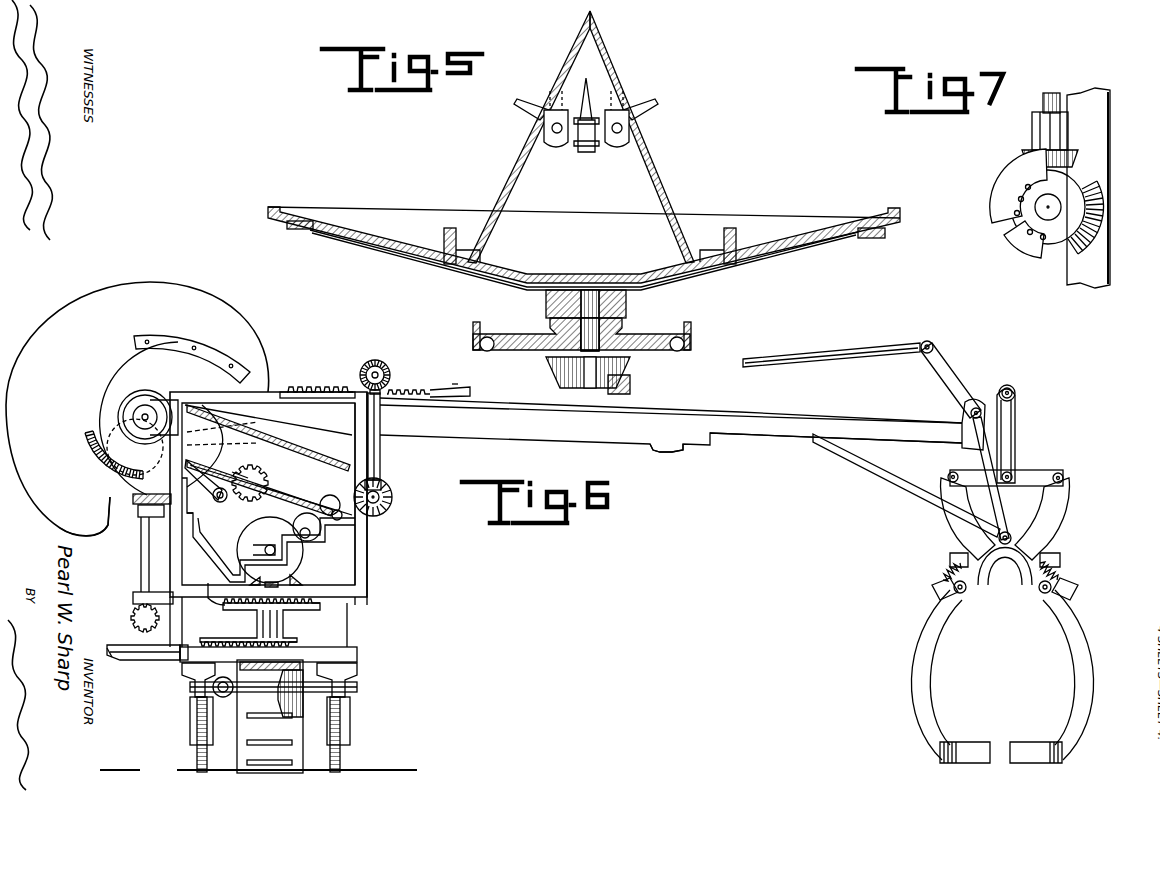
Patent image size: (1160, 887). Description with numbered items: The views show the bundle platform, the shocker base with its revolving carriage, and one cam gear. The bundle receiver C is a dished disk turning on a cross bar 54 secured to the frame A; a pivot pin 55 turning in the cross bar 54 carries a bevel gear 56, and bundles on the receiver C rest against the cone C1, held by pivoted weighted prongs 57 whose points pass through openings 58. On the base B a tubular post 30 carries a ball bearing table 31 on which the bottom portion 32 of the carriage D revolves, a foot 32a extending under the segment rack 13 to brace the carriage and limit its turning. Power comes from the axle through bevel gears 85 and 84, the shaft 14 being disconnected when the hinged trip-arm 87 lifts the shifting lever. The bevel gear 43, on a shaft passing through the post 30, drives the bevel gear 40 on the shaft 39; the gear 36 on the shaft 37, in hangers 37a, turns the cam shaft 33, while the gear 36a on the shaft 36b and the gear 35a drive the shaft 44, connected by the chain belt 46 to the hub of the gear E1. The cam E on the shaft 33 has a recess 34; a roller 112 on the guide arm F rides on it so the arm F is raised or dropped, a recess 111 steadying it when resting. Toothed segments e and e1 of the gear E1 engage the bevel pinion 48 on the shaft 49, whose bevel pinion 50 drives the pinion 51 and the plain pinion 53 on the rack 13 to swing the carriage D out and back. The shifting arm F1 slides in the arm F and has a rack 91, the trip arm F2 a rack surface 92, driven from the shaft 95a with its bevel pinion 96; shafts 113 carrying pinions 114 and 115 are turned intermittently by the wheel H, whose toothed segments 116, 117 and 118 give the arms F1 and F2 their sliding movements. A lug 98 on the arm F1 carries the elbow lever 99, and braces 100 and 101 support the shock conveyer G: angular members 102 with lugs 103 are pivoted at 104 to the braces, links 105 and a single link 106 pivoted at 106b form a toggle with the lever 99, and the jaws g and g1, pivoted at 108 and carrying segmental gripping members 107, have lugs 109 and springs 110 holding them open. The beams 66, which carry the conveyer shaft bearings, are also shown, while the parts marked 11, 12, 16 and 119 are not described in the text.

In FIG. 6, the leg bracket 11 is at (190, 716).
In FIG. 6, the roller wheel 12 is at (197, 756).
In FIG. 6, the segment rack 13 is at (376, 656).
In FIG. 6, the shaft 14 is at (283, 690).
In FIG. 6, the bearing bracket 16 is at (350, 686).
In FIG. 6, the tubular post 30 is at (283, 626).
In FIG. 6, the ball bearing table 31 is at (236, 610).
In FIG. 6, the bottom portion of carriage 32 is at (330, 591).
In FIG. 6, the foot 32a is at (180, 660).
In FIG. 6, the cam shaft 33 is at (118, 415).
In FIG. 6, the recess 34 is at (100, 500).
In FIG. 6, the gear 35a is at (380, 476).
In FIG. 6, the gear 36 is at (250, 487).
In FIG. 6, the gear 36a is at (306, 528).
In FIG. 6, the shaft 36b is at (338, 510).
In FIG. 6, the shaft 37 is at (220, 502).
In FIG. 6, the hangers 37a is at (250, 477).
In FIG. 6, the shaft 39 is at (262, 553).
In FIG. 6, the bevel gear 40 is at (270, 552).
In FIG. 6, the bevel gear 43 is at (316, 663).
In FIG. 7, the shaft 44 is at (1052, 207).
In FIG. 6, the shaft 44 is at (380, 495).
In FIG. 6, the chain belt 46 is at (305, 450).
In FIG. 6, the bevel pinion 48 is at (140, 512).
In FIG. 6, the shaft 49 is at (141, 558).
In FIG. 6, the bevel pinion 50 is at (130, 613).
In FIG. 6, the beveled pinion 51 is at (160, 596).
In FIG. 6, the plain pinion 53 is at (210, 576).
In FIG. 5, the cross bar 54 is at (622, 330).
In FIG. 5, the pivot pin 55 is at (598, 290).
In FIG. 5, the bevel gear 56 is at (566, 375).
In FIG. 5, the weighted prongs 57 is at (524, 112).
In FIG. 5, the openings 58 is at (548, 100).
In FIG. 6, the beams 66 is at (133, 639).
In FIG. 6, the bevel gear 84 is at (195, 696).
In FIG. 6, the bevel gear 85 is at (226, 698).
In FIG. 6, the hinged trip-arm 87 is at (349, 630).
In FIG. 6, the rack 91 is at (326, 387).
In FIG. 6, the rack surface 92 is at (455, 384).
In FIG. 6, the shaft 95a is at (375, 360).
In FIG. 6, the bevel pinion 96 is at (384, 368).
In FIG. 6, the lug 98 is at (968, 440).
In FIG. 6, the elbow lever 99 is at (953, 388).
In FIG. 6, the brace 100 is at (915, 492).
In FIG. 6, the brace 101 is at (1003, 524).
In FIG. 6, the angular members 102 is at (960, 530).
In FIG. 6, the lugs 103 is at (950, 560).
In FIG. 6, the pivot 104 is at (1005, 546).
In FIG. 6, the links 105 is at (985, 478).
In FIG. 6, the link 106 is at (1015, 431).
In FIG. 6, the pivot 106b is at (1015, 392).
In FIG. 6, the segmental gripping members 107 is at (979, 748).
In FIG. 6, the pivoted connection 108 is at (962, 594).
In FIG. 6, the lug 109 is at (935, 592).
In FIG. 6, the springs 110 is at (940, 578).
In FIG. 6, the recess 111 is at (667, 453).
In FIG. 6, the roller 112 is at (132, 454).
In FIG. 7, the shafts 113 is at (1043, 103).
In FIG. 6, the shafts 113 is at (380, 436).
In FIG. 6, the beveled pinions 114 is at (400, 391).
In FIG. 7, the pinions 115 is at (1030, 152).
In FIG. 6, the pinions 115 is at (392, 488).
In FIG. 7, the toothed segment 116 is at (992, 196).
In FIG. 7, the toothed segment 117 is at (1098, 245).
In FIG. 7, the intermediate toothed segment 118 is at (1035, 256).
In FIG. 6, the arm tip 119 is at (112, 658).
In FIG. 5, the frame A is at (473, 338).
In FIG. 6, the base B is at (250, 733).
In FIG. 5, the bundle receiver C is at (584, 248).
In FIG. 5, the cone C1 is at (612, 62).
In FIG. 7, the carriage D is at (1100, 188).
In FIG. 6, the carriage D is at (367, 572).
In FIG. 6, the cam E is at (137, 409).
In FIG. 6, the gear E1 is at (97, 366).
In FIG. 6, the toothed segment e is at (140, 335).
In FIG. 6, the toothed segment e1 is at (155, 493).
In FIG. 6, the conveyer guide arm F is at (486, 432).
In FIG. 6, the conveyer shifting arm F1 is at (780, 415).
In FIG. 6, the conveyer trip arm F2 is at (872, 346).
In FIG. 6, the shock conveyer G is at (1004, 677).
In FIG. 6, the jaw g is at (915, 713).
In FIG. 6, the jaw g1 is at (1088, 684).
In FIG. 7, the wheel H is at (962, 231).